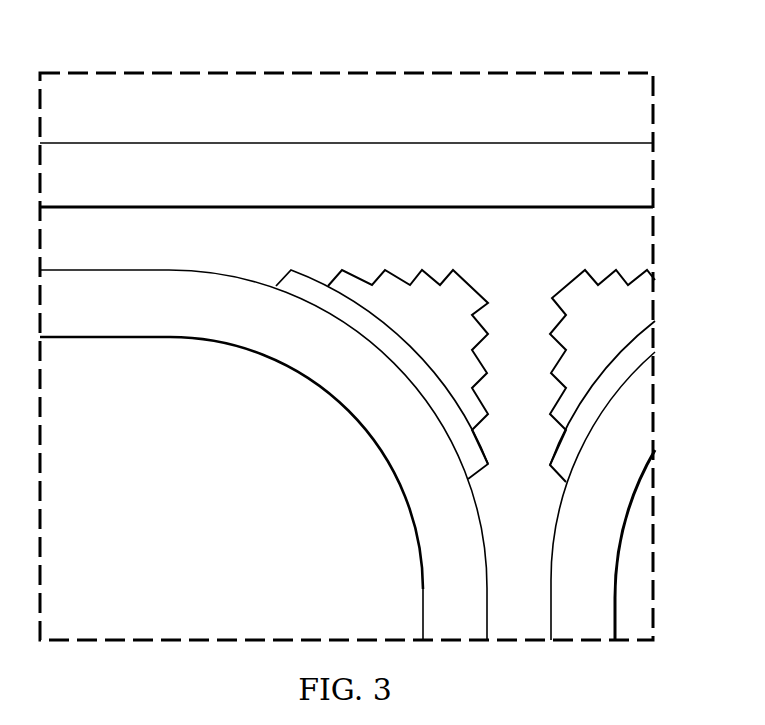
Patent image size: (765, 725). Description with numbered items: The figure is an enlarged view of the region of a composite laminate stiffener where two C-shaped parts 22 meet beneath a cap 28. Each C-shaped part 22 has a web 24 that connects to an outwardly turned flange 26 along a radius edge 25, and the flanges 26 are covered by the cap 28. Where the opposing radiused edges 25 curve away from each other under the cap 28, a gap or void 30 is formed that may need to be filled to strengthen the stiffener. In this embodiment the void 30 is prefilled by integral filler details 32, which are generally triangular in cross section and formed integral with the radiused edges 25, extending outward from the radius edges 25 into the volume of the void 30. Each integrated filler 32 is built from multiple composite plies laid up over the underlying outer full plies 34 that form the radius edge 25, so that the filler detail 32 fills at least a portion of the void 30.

The C-shaped part 22 is at (628, 562).
The web 24 is at (421, 600).
The radius edge 25 is at (260, 290).
The flange 26 is at (110, 340).
The cap 28 is at (150, 142).
The void 30 is at (520, 284).
The integral filler detail 32 is at (395, 283).
The outer full ply 34 is at (385, 352).